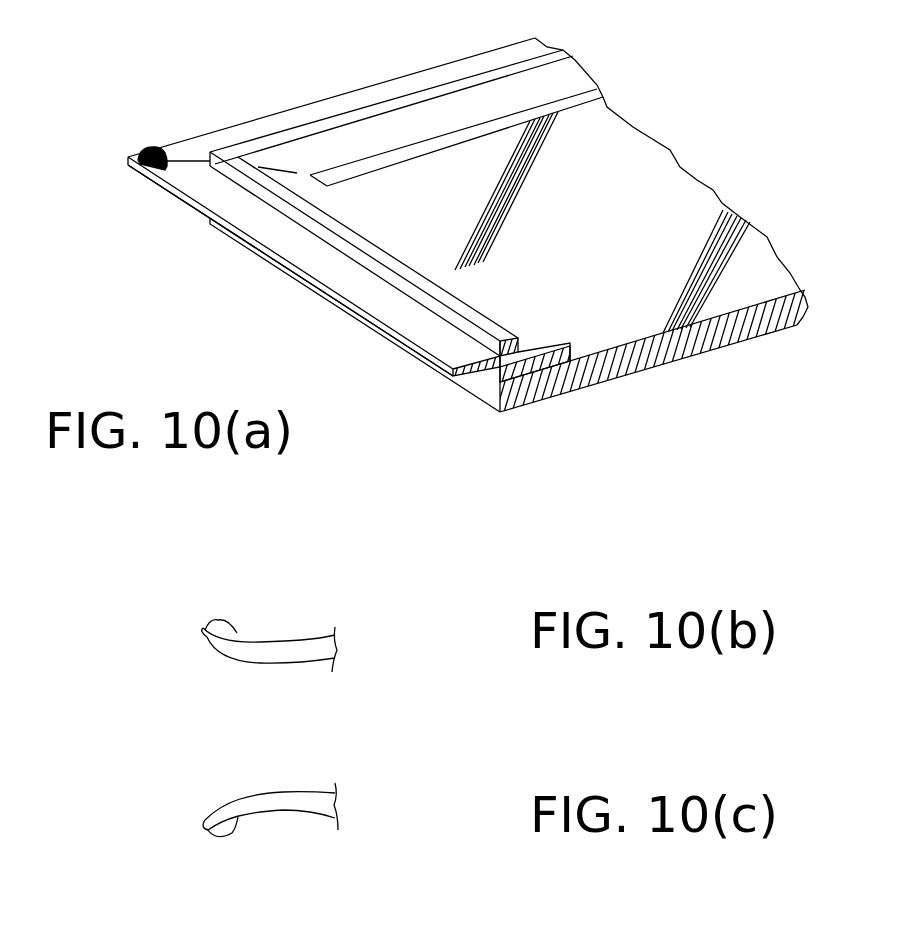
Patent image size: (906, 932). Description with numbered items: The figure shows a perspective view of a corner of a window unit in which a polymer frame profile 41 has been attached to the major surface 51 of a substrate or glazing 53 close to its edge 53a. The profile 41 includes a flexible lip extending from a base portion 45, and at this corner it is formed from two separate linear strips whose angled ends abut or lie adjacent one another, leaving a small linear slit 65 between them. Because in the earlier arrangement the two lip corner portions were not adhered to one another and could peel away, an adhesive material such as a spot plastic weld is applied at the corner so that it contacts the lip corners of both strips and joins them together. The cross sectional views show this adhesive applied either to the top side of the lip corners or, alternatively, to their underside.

The frame profile 41 is at (365, 209).
The base portion 45 is at (482, 300).
The major surface 51 is at (757, 247).
The substrate/glazing 53 is at (663, 365).
The edge 53a is at (478, 387).
The linear slit 65 is at (297, 173).